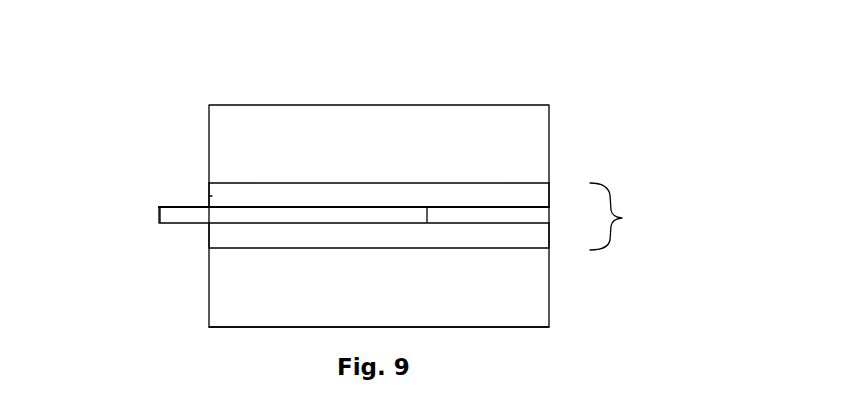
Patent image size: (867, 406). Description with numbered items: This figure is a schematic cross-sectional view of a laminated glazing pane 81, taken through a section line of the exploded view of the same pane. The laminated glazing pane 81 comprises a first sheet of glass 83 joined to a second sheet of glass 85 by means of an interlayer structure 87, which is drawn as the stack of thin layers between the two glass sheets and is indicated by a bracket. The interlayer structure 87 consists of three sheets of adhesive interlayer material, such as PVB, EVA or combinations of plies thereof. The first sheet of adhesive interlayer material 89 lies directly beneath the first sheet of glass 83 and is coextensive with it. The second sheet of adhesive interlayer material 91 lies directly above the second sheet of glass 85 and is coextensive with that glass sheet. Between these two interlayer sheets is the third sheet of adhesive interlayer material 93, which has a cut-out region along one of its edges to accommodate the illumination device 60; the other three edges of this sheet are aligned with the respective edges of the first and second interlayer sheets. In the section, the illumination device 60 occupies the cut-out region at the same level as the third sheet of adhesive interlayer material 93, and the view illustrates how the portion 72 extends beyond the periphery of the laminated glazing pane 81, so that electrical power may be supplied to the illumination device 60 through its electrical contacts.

The laminated glazing pane 81 is at (573, 73).
The first sheet of glass 83 is at (241, 127).
The first sheet of adhesive interlayer material 89 is at (217, 193).
The portion 72 is at (183, 195).
The interlayer structure 87 is at (622, 218).
The third sheet of adhesive interlayer material 93 is at (533, 213).
The illumination device 60 is at (169, 218).
The second sheet of adhesive interlayer material 91 is at (223, 237).
The second sheet of glass 85 is at (244, 308).